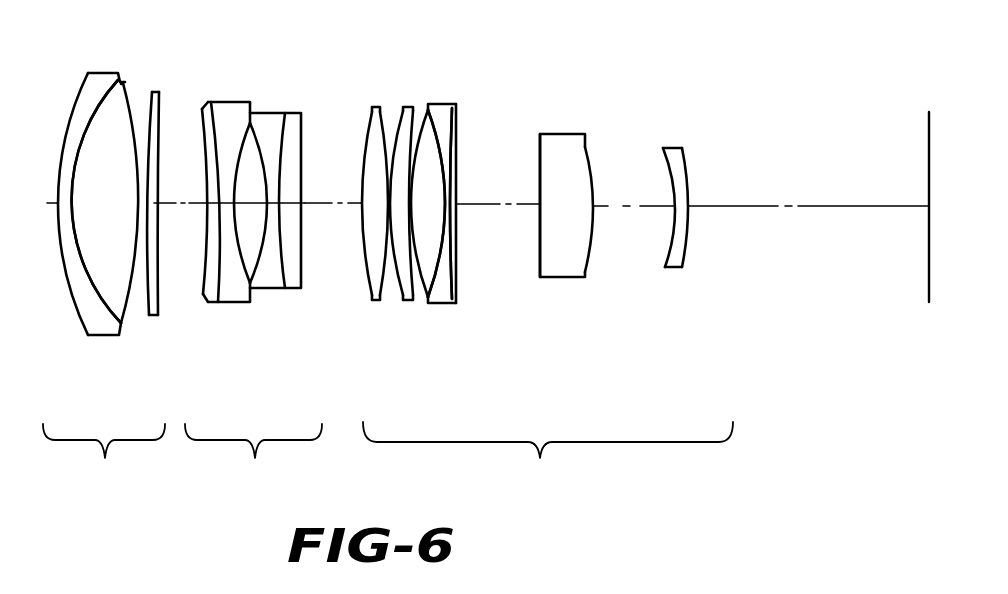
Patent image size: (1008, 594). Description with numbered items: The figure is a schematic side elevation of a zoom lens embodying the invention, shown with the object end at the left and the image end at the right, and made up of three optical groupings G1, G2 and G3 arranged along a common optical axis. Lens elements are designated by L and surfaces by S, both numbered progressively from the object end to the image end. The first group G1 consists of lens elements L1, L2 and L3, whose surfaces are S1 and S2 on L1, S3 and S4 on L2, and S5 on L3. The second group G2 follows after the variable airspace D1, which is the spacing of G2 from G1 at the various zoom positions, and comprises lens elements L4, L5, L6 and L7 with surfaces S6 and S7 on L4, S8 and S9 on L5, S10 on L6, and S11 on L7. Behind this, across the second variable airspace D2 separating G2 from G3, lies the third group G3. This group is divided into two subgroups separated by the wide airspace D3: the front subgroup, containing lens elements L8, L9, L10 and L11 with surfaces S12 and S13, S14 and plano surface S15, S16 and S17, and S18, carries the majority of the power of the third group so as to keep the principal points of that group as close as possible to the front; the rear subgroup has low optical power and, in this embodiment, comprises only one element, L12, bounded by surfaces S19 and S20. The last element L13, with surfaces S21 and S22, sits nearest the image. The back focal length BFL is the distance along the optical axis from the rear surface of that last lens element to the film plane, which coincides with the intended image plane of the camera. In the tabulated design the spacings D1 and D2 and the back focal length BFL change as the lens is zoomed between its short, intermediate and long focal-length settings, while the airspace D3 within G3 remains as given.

The lens element L1 is at (72, 211).
The lens element L2 is at (116, 206).
The lens element L3 is at (175, 216).
The lens element L4 is at (227, 189).
The lens element L5 is at (295, 202).
The lens element L6 is at (308, 158).
The lens element L7 is at (367, 228).
The lens element L8 is at (451, 215).
The lens element L9 is at (466, 162).
The lens element L10 is at (483, 184).
The lens element L11 is at (455, 125).
The lens element L12 is at (599, 224).
The lens element L13 is at (687, 189).
The lens surface S1 is at (83, 316).
The lens surface S2 is at (88, 331).
The lens surface S3 is at (127, 343).
The lens surface S4 is at (148, 318).
The lens surface S5 is at (162, 312).
The lens surface S6 is at (203, 272).
The lens surface S7 is at (197, 308).
The lens surface S8 is at (243, 252).
The lens surface S9 is at (259, 238).
The lens surface S10 is at (300, 290).
The lens surface S11 is at (302, 241).
The lens surface S12 is at (367, 293).
The lens surface S13 is at (390, 298).
The lens surface S14 is at (400, 303).
The lens surface S15 is at (413, 297).
The lens surface S16 is at (410, 267).
The lens surface S17 is at (440, 277).
The lens surface S18 is at (458, 298).
The lens surface S19 is at (538, 265).
The lens surface S20 is at (590, 273).
The lens surface S21 is at (672, 235).
The lens surface S22 is at (688, 249).
The spacing D1 is at (229, 189).
The spacing D2 is at (333, 189).
The airspace D3 is at (498, 189).
The lens group G1 is at (104, 460).
The lens group G2 is at (253, 460).
The lens group G3 is at (548, 459).
The back focal length BFL is at (808, 189).